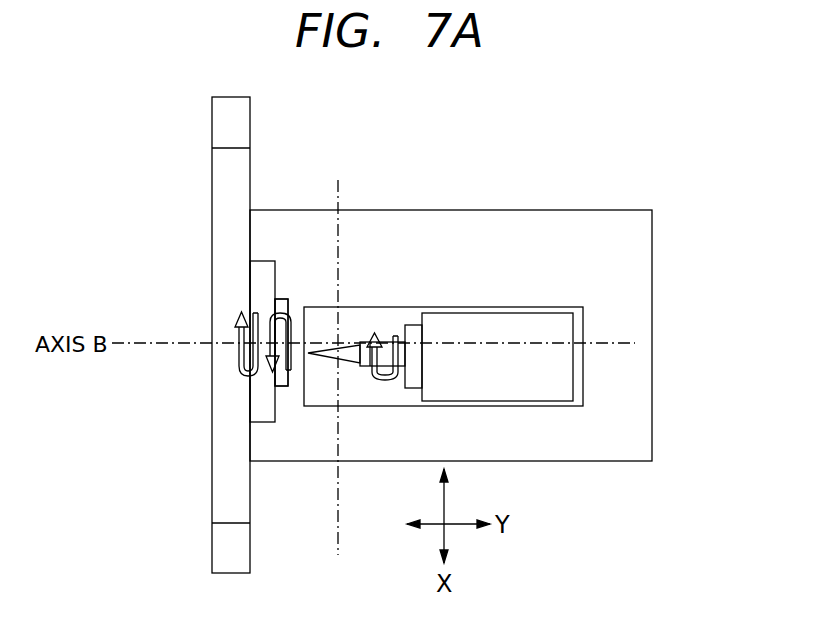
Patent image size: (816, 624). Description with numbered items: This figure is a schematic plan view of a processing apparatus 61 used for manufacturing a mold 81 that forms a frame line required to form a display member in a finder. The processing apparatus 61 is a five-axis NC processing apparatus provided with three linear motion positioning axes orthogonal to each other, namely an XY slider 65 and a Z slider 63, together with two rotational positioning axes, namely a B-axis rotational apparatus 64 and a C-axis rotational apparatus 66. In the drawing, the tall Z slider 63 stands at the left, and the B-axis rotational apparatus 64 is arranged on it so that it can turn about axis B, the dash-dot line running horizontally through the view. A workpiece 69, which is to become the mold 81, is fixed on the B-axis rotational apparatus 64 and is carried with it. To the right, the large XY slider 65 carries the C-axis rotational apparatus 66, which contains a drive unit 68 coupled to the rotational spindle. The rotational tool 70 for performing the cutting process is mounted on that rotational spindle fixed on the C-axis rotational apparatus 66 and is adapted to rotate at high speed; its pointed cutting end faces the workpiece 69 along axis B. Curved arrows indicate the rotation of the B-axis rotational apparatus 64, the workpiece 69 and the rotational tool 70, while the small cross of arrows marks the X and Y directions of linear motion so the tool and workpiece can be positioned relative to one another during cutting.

The processing apparatus 61 is at (160, 178).
The Z slider 63 is at (222, 460).
The B-axis rotational apparatus 64 is at (262, 268).
The XY slider 65 is at (476, 235).
The C-axis rotational apparatus 66 is at (585, 380).
The motor 68 is at (558, 331).
The workpiece 69 is at (288, 299).
The mold 81 is at (281, 342).
The rotational tool 70 is at (332, 357).